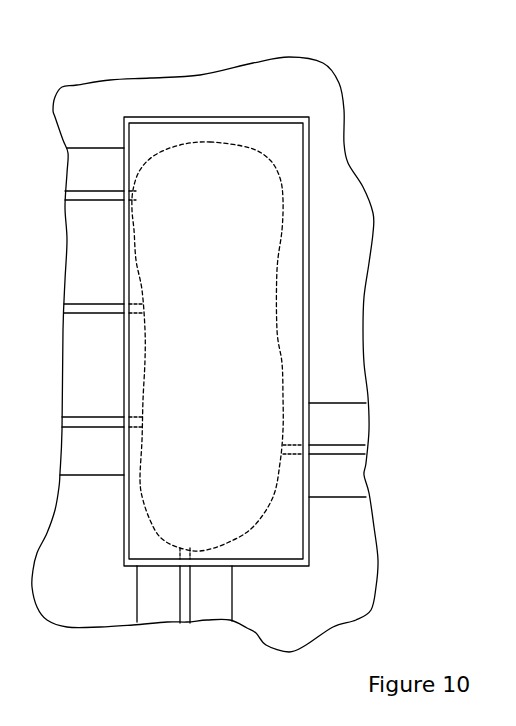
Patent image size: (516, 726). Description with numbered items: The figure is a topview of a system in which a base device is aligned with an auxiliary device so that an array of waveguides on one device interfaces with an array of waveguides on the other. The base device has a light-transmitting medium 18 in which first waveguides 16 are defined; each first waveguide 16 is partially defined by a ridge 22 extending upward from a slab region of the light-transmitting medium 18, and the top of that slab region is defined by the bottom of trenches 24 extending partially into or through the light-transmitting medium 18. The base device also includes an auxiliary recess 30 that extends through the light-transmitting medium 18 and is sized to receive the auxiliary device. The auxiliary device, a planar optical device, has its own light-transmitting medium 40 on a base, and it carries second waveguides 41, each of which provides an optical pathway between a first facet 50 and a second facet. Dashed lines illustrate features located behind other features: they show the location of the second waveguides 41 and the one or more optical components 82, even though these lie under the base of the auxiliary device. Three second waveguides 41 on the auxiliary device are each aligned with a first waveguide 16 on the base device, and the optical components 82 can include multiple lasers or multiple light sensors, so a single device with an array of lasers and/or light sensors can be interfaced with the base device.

The first waveguide 16 is at (86, 215).
The light-transmitting medium 18 is at (70, 596).
The ridge 22 is at (77, 191).
The trenches 24 is at (100, 164).
The auxiliary recess 30 is at (237, 118).
The light-transmitting medium 40 is at (148, 133).
The second waveguide 41 is at (139, 284).
The first facet 50 is at (132, 194).
The optical components 82 is at (281, 232).